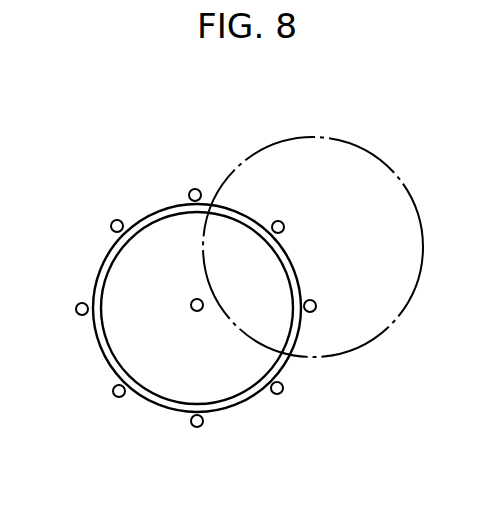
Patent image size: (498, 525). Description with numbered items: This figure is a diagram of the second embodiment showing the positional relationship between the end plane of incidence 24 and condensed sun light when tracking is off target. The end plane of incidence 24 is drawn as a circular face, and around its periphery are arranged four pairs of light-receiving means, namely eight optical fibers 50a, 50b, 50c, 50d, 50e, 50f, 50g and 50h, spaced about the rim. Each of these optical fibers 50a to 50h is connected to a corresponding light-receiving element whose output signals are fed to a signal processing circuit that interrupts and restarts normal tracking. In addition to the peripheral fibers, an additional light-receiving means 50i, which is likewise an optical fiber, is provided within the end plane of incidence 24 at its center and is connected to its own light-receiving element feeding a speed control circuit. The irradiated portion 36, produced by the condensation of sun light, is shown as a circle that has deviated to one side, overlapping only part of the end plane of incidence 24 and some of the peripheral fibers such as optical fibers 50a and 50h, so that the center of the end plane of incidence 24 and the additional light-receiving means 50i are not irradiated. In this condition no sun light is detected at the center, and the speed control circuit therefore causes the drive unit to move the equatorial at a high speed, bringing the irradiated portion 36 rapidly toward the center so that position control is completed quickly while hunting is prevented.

The end plane of incidence 24 is at (102, 333).
The irradiated portion 36 is at (404, 311).
The optical fiber 50a is at (195, 189).
The optical fiber 50b is at (112, 221).
The optical fiber 50c is at (80, 303).
The optical fiber 50d is at (114, 395).
The optical fiber 50e is at (197, 427).
The optical fiber 50f is at (281, 393).
The optical fiber 50g is at (316, 306).
The optical fiber 50h is at (282, 221).
The additional light-receiving means 50i is at (194, 311).